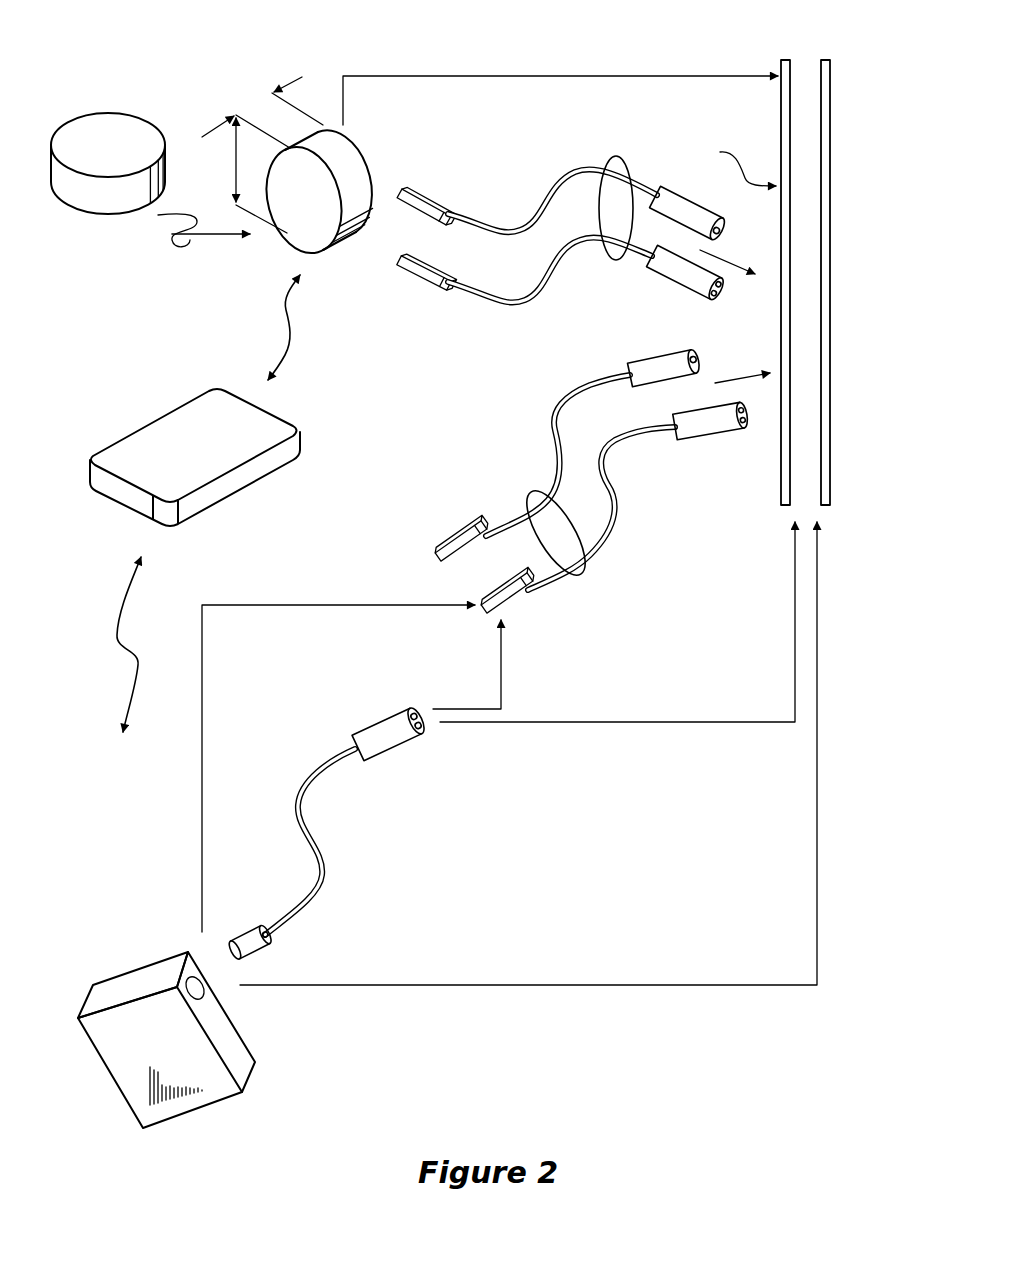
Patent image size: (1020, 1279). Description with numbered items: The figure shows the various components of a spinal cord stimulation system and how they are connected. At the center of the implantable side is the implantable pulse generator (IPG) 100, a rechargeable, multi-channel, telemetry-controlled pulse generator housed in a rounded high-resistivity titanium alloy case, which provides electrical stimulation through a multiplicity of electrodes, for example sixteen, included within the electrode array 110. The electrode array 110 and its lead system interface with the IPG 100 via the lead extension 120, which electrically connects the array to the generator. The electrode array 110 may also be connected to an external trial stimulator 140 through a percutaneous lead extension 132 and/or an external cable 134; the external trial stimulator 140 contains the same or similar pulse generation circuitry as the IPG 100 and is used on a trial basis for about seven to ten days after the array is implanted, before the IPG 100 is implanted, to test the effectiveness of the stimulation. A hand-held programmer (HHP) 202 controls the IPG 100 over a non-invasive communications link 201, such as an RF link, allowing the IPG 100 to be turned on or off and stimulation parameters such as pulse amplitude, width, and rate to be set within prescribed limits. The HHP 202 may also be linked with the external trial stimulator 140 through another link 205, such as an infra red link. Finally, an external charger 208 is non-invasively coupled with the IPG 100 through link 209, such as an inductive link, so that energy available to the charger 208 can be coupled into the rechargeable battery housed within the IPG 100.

The implantable pulse generator (IPG) 100 is at (358, 144).
The electrode array 110 is at (805, 72).
The lead extension 120 is at (615, 158).
The percutaneous lead extension 132 is at (528, 494).
The external cable 134 is at (323, 762).
The external trial stimulator 140 is at (133, 985).
The non-invasive communications link 201 is at (290, 320).
The hand-held programmer (HHP) 202 is at (168, 425).
The link 205 is at (117, 603).
The external charger 208 is at (108, 122).
The link 209 is at (190, 244).